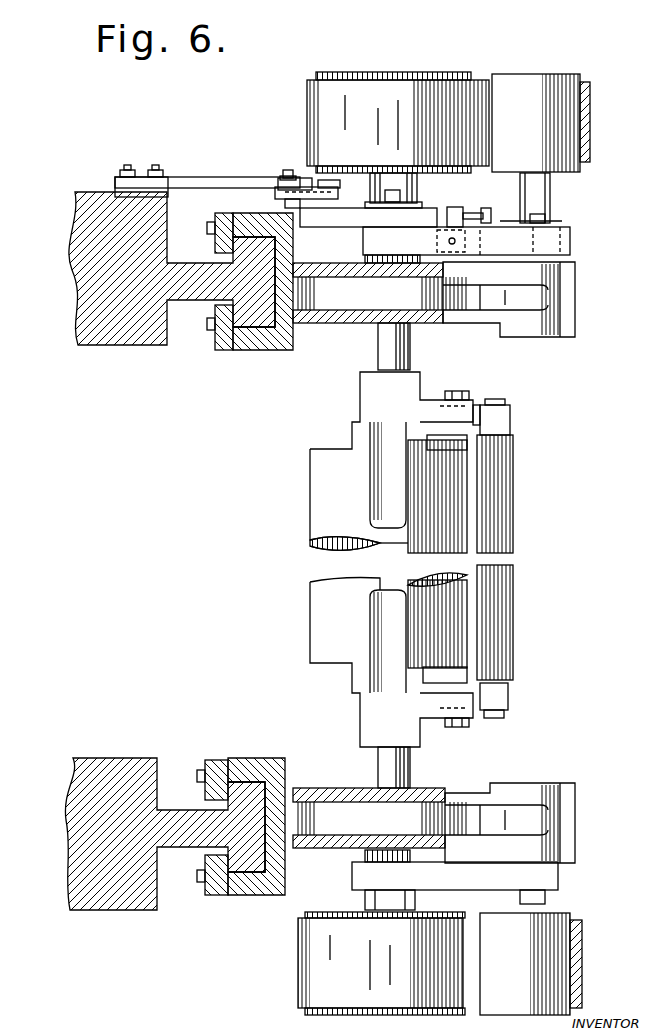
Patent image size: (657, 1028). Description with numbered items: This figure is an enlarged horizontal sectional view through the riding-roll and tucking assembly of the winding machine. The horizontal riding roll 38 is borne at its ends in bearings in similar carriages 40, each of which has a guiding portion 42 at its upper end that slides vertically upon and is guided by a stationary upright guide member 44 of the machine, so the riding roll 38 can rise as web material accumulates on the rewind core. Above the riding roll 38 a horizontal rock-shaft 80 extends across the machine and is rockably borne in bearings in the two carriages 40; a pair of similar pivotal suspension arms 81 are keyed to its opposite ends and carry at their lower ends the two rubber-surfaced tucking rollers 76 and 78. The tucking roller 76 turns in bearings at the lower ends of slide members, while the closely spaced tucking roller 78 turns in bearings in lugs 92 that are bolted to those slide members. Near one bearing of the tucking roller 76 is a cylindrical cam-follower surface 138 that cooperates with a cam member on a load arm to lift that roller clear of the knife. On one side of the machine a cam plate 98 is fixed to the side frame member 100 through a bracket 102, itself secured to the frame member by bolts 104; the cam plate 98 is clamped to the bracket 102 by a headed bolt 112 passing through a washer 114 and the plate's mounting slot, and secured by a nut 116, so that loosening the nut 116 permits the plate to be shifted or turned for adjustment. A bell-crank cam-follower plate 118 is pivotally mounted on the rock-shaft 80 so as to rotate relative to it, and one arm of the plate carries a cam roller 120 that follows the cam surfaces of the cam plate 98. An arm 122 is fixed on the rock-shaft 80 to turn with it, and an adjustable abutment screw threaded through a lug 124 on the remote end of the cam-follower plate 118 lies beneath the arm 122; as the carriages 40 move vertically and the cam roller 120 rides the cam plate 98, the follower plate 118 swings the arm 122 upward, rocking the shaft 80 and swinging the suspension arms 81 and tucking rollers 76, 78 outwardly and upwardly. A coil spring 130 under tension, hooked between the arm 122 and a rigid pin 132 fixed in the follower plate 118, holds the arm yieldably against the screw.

The riding roll 38 is at (365, 559).
The carriages 40 is at (369, 555).
The guiding portions 42 is at (245, 574).
The upright guide members 44 is at (245, 283).
The tucking roller 76 is at (495, 555).
The tucking roller 78 is at (522, 557).
The rock-shaft 80 is at (416, 555).
The suspension arms 81 is at (486, 405).
The lugs 92 is at (518, 558).
The cam plate 98 is at (276, 168).
The side frame member 100 is at (146, 533).
The bracket 102 is at (207, 164).
The bolts 104 is at (138, 154).
The headed bolt 112 is at (368, 229).
The washer 114 is at (278, 197).
The nut 116 is at (284, 153).
The cam-follower plate 118 is at (378, 245).
The cam roller 120 is at (345, 156).
The arm 122 is at (486, 558).
The lug 124 is at (445, 201).
The coil spring 130 is at (501, 203).
The rigid pin 132 is at (481, 196).
The cam-follower surface 138 is at (472, 553).